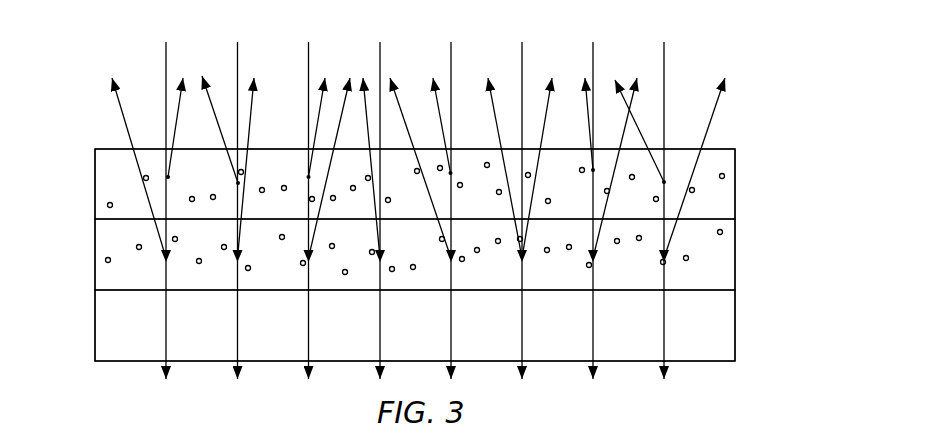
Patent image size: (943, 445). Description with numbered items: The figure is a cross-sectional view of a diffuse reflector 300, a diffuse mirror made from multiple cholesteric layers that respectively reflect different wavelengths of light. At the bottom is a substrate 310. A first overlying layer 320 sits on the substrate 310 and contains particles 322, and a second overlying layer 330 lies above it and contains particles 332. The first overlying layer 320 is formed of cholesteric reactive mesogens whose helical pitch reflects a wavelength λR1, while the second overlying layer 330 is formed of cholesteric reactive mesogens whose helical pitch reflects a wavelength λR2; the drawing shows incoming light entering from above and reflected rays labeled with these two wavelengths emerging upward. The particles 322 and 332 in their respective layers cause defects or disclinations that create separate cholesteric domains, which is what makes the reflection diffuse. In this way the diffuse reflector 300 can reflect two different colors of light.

The diffuse reflector 300 is at (94, 38).
The substrate 310 is at (735, 343).
The first overlying layer 320 is at (735, 272).
The second overlying layer 330 is at (735, 164).
The particles 322 is at (107, 260).
The particles 332 is at (108, 205).